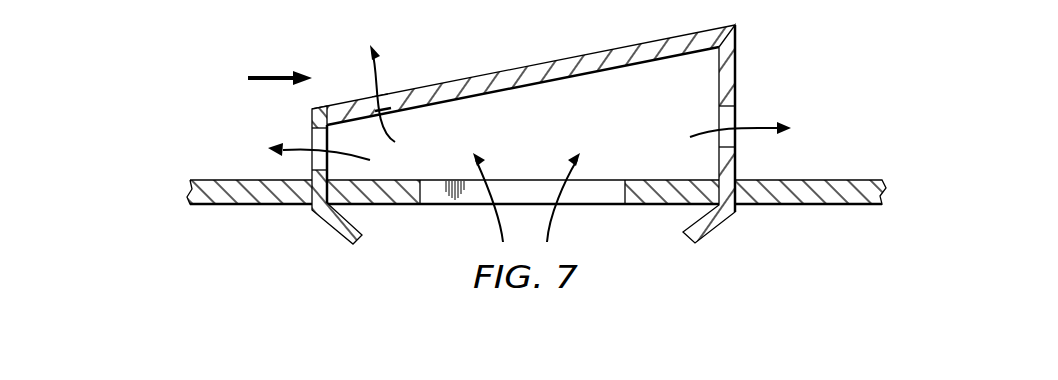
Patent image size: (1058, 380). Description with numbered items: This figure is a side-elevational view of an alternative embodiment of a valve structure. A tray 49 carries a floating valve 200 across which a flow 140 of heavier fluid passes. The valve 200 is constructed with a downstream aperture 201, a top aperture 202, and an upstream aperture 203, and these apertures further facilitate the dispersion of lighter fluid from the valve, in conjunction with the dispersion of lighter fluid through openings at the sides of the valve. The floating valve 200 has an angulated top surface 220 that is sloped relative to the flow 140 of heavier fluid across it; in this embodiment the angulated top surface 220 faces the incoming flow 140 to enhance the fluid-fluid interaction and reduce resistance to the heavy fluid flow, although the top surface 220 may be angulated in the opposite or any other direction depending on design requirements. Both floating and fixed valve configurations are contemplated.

The tray 49 is at (815, 183).
The flow of heavier fluid 140 is at (268, 73).
The floating valve 200 is at (552, 127).
The downstream aperture 201 is at (728, 115).
The top aperture 202 is at (397, 102).
The upstream aperture 203 is at (318, 142).
The angulated top surface 220 is at (577, 55).